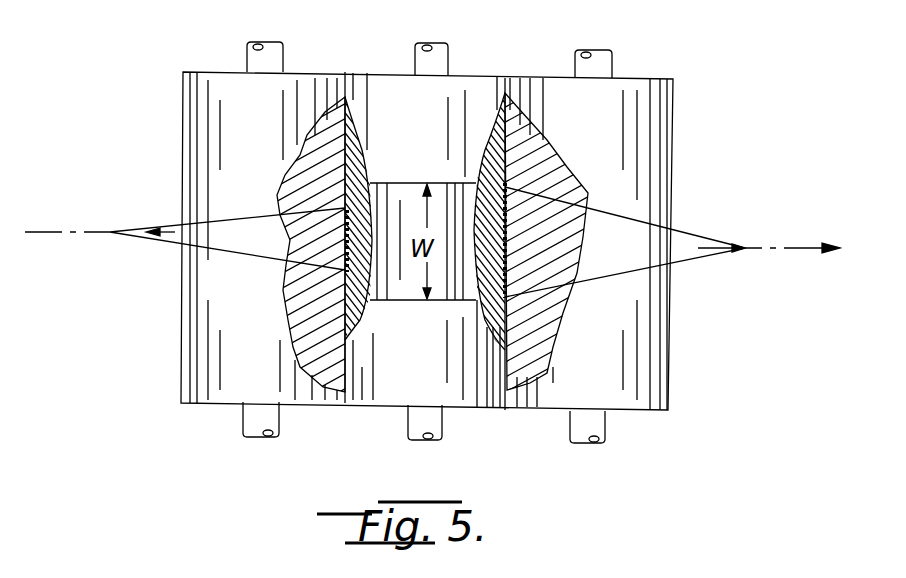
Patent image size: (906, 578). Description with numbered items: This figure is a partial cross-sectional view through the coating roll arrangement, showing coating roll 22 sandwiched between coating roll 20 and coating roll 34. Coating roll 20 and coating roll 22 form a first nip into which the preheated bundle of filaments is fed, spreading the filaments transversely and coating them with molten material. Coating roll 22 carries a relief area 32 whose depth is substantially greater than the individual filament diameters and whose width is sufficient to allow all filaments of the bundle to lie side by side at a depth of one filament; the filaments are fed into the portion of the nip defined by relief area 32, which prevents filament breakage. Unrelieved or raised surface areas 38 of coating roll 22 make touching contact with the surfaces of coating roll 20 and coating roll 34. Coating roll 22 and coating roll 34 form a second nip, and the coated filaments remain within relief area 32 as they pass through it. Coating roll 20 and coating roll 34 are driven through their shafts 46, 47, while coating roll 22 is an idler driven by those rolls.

The coating roll 20 is at (215, 68).
The coating roll 22 is at (480, 73).
The relief area 32 is at (398, 290).
The coating roll 34 is at (680, 93).
The unrelieved or raised surface areas 38 is at (390, 77).
The shaft 46 is at (245, 418).
The shaft 47 is at (604, 424).